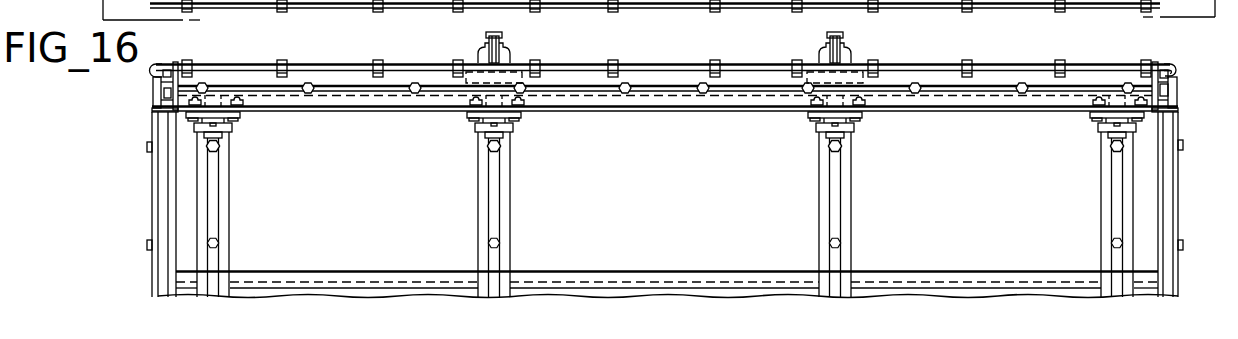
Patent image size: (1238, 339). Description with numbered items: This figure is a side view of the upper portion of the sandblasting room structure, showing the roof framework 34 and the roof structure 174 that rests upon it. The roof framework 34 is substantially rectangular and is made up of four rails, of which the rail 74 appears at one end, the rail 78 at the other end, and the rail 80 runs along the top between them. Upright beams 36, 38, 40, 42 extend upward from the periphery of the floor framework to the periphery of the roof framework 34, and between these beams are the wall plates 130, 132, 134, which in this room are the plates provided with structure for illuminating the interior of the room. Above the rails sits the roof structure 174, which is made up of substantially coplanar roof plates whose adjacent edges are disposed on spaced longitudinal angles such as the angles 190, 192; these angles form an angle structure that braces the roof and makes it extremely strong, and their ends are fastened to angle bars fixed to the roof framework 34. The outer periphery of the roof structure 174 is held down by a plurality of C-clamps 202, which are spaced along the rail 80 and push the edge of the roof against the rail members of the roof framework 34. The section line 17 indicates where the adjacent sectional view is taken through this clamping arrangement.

The section line 17— 17 is at (597, 78).
The roof framework 34 is at (1172, 84).
The upright beam 36 is at (223, 241).
The upright beam 38 is at (504, 242).
The upright beam 40 is at (846, 242).
The upright beam 42 is at (1108, 242).
The rail 74 is at (168, 99).
The rail 78 is at (1179, 97).
The rail 80 is at (236, 77).
The wall plate 130 is at (362, 147).
The wall plate 132 is at (681, 147).
The wall plate 134 is at (998, 147).
The roof structure 174 is at (1112, 57).
The longitudinal angle 190 is at (480, 58).
The longitudinal angle 192 is at (504, 56).
The C-clamp 202 is at (379, 59).